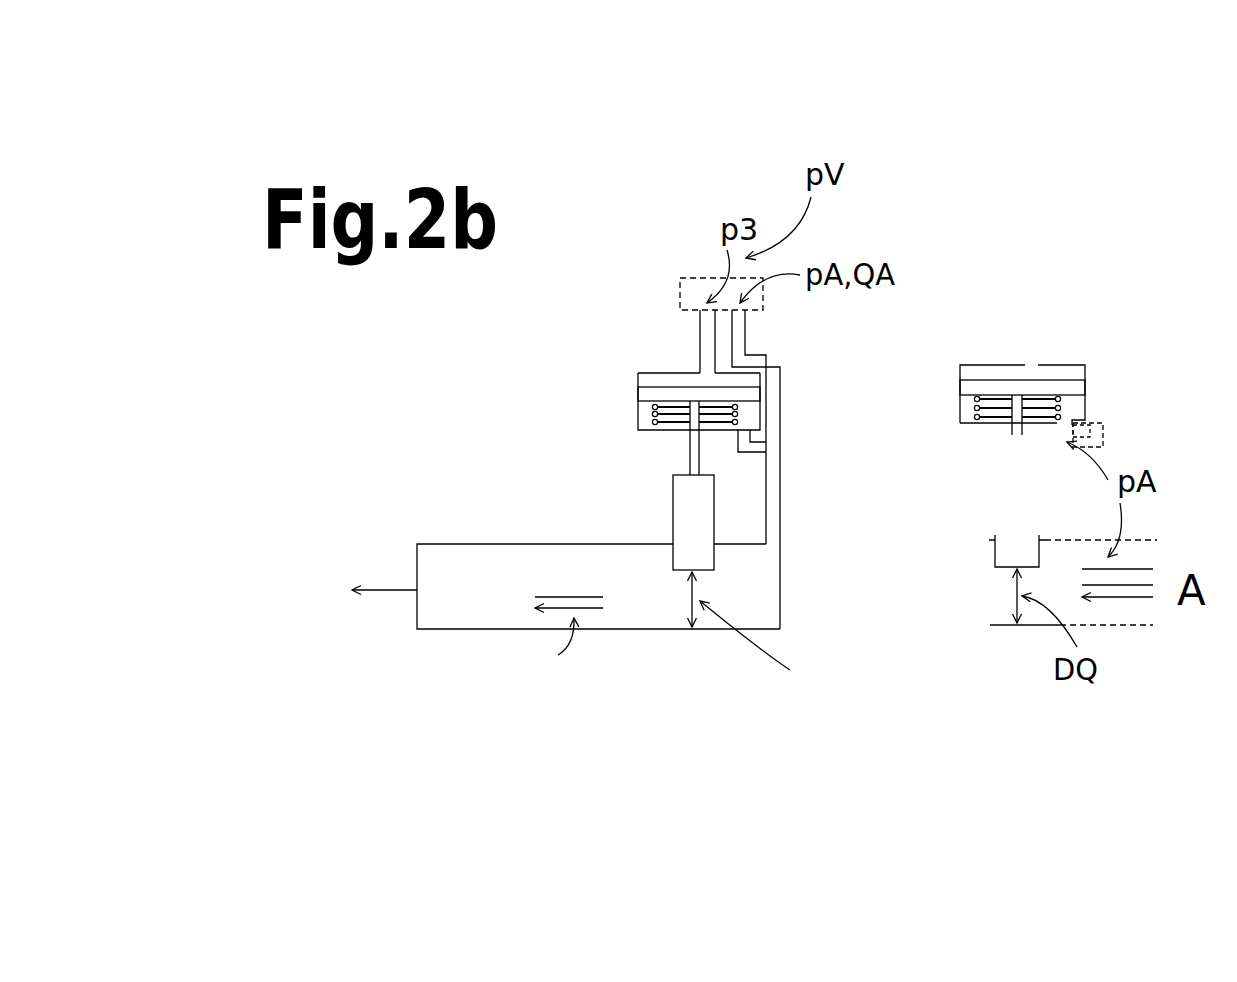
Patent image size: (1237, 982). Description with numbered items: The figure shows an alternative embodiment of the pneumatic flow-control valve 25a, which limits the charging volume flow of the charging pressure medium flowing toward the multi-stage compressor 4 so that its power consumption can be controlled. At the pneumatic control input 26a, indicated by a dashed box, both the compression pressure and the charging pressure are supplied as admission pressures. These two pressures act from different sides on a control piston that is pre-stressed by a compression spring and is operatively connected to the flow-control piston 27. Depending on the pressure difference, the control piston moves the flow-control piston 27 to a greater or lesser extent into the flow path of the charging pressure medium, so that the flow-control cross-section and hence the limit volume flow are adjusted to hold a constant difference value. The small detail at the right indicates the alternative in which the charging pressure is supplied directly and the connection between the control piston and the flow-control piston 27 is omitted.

The multi-stage compressor 4 is at (364, 588).
The pneumatic flow-control valve 25a is at (562, 493).
The pneumatic control input 26a is at (698, 283).
The flow-control piston 27 is at (687, 507).